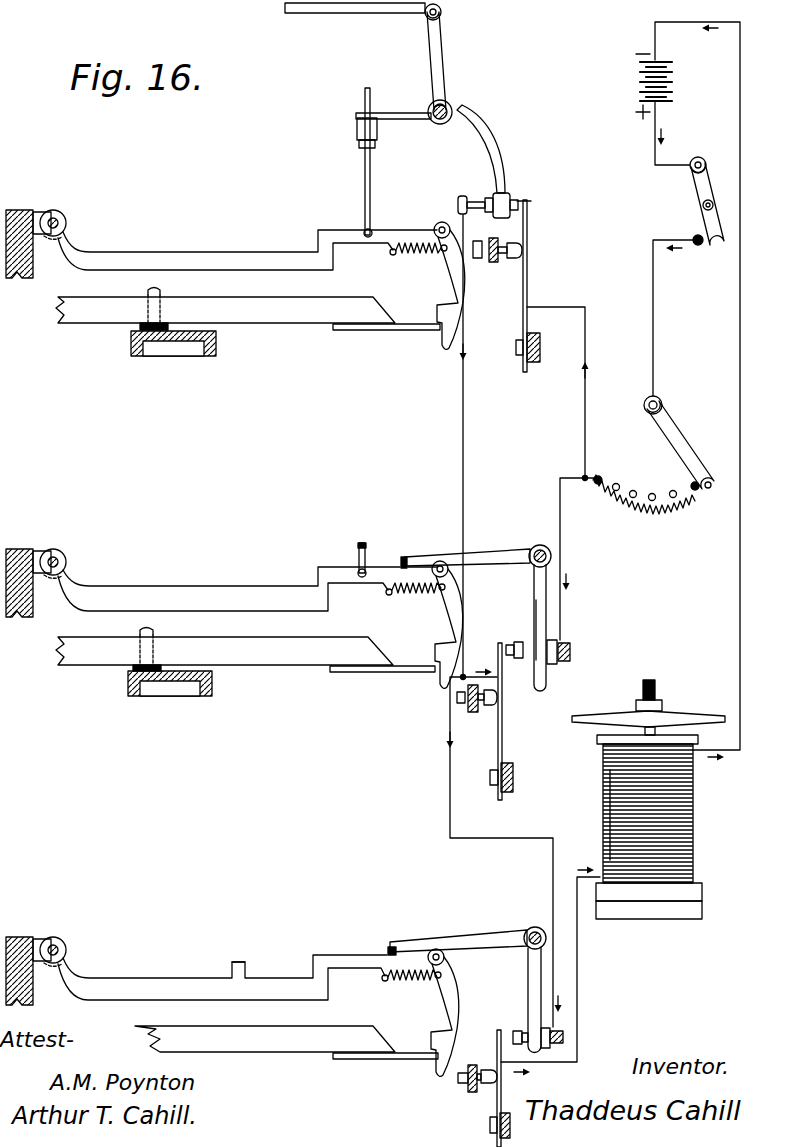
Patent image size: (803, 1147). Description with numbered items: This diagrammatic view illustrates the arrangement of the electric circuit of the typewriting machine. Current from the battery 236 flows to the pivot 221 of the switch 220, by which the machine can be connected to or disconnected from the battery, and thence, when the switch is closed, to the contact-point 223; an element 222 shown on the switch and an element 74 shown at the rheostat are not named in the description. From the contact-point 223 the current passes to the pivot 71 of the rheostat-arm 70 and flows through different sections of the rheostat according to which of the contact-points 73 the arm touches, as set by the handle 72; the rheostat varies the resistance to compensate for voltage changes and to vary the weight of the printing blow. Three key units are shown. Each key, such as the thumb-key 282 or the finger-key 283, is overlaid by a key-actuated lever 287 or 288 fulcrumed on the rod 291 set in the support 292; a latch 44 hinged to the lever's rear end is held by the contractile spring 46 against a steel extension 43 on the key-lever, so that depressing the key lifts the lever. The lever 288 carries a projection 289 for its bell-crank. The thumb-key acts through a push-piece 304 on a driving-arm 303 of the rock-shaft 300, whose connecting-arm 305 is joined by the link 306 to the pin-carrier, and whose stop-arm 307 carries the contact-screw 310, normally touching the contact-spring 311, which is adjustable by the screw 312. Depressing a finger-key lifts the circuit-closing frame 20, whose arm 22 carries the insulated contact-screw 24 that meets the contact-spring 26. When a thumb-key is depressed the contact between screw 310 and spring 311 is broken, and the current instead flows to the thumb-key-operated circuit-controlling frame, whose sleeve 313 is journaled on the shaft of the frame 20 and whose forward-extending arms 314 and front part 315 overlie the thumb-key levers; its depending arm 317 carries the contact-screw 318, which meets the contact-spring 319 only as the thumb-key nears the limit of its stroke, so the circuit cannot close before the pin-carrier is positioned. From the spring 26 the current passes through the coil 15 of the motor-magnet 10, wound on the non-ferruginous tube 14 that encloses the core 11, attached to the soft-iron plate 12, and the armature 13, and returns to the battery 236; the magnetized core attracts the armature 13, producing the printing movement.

The motor-magnet 10 is at (659, 809).
The core 11 is at (700, 896).
The soft-iron plate 12 is at (663, 914).
The armature 13 is at (688, 719).
The non-ferruginous tube 14 is at (630, 728).
The energizing-coil 15 is at (622, 786).
The circuit-closing frame 20 is at (533, 566).
The arm 22 is at (528, 975).
The contact-screw 24 is at (521, 1030).
The contact-spring 26 is at (496, 1097).
The steel extension 43 is at (418, 332).
The latch 44 is at (458, 282).
The contractile spring 46 is at (406, 256).
The rheostat-arm 70 is at (680, 438).
The pivot 71 is at (645, 398).
The handle 72 is at (707, 500).
The contact-points 73 is at (672, 492).
The ratchet segment 74 is at (641, 517).
The switch 220 is at (701, 188).
The pivot 221 is at (710, 150).
The lever pin 222 is at (703, 206).
The contact-point 223 is at (698, 246).
The battery 236 is at (672, 82).
The thumb-key 282 is at (258, 324).
The finger-key 283 is at (278, 1051).
The key-actuated lever 287 is at (190, 258).
The key-actuated lever 288 is at (205, 963).
The projection 289 is at (248, 963).
The rod 291 is at (66, 222).
The support 292 is at (23, 208).
The rock-shaft 300 is at (455, 112).
The driving-arm 303 is at (395, 122).
The push-piece 304 is at (364, 92).
The connecting-arm 305 is at (442, 70).
The link 306 is at (328, 10).
The stop-arm 307 is at (490, 147).
The contact-screw 310 is at (465, 196).
The contact-spring 311 is at (528, 280).
The screw 312 is at (503, 258).
The sleeve 313 is at (540, 545).
The forward-extending arms 314 is at (490, 556).
The front part 315 is at (402, 556).
The depending arm 317 is at (535, 615).
The contact-screw 318 is at (573, 650).
The contact-spring 319 is at (503, 720).